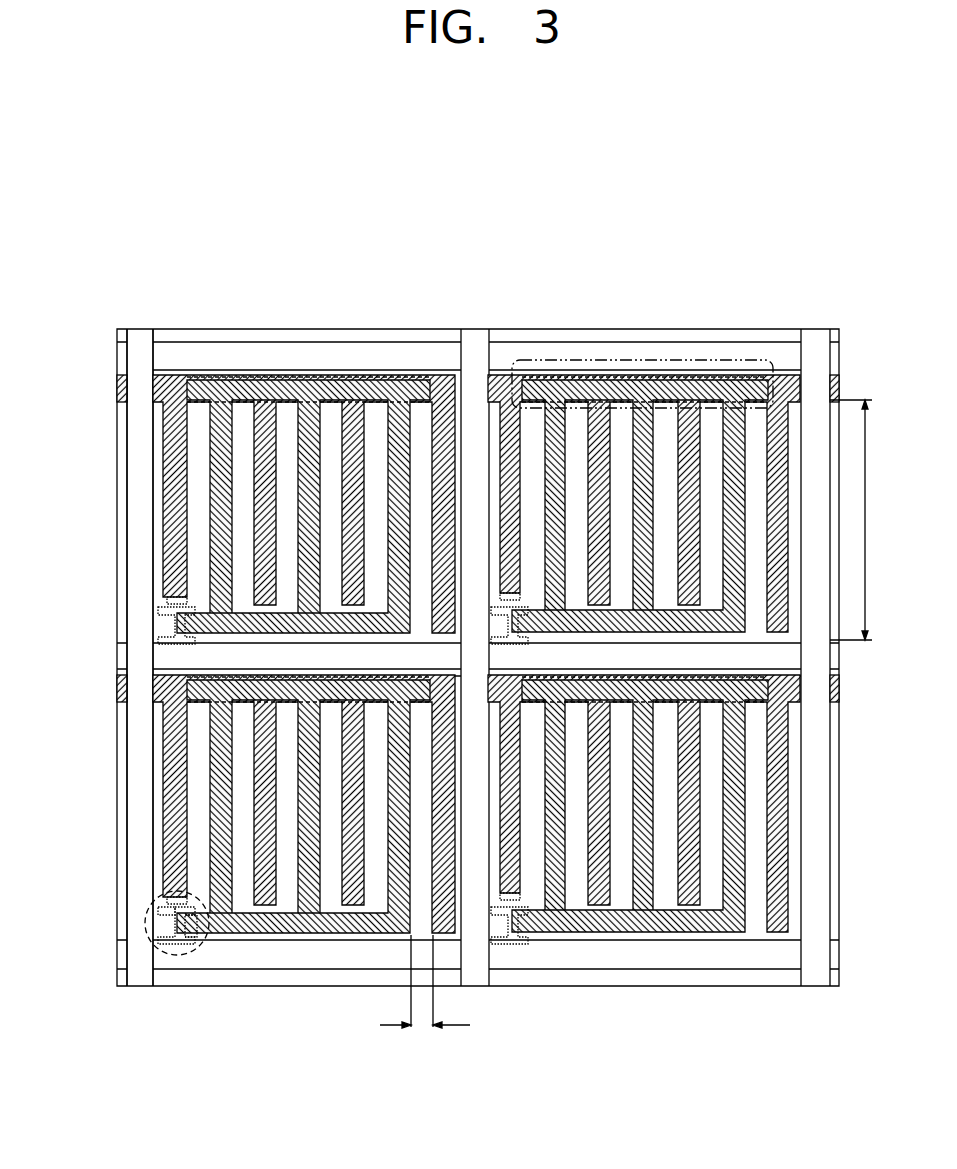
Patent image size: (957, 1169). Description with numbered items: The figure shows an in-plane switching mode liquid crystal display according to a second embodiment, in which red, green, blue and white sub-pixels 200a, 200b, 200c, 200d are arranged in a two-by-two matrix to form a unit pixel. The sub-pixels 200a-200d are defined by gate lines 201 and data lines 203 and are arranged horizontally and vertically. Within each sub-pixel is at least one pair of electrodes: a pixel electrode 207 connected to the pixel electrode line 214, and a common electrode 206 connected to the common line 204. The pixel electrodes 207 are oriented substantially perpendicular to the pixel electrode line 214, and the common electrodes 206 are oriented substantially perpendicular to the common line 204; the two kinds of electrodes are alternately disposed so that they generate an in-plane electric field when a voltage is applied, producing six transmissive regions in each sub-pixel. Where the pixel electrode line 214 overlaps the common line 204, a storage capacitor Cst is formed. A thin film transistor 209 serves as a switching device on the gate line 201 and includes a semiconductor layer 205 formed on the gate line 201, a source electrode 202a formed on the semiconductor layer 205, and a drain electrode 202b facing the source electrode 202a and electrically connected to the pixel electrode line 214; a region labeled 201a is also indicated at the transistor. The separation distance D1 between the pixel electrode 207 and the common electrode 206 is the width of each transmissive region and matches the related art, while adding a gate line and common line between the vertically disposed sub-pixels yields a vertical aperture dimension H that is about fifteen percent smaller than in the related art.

The R sub-pixel 200a is at (252, 906).
The G sub-pixel 200b is at (304, 412).
The B sub-pixel 200c is at (644, 412).
The W sub-pixel 200d is at (640, 1058).
The gate line 201 is at (180, 962).
The active layer 201a is at (168, 897).
The source electrode 202a is at (168, 923).
The drain electrode 202b is at (197, 932).
The data line 203 is at (133, 808).
The common line 204 is at (117, 388).
The semiconductor layer 205 is at (176, 945).
The common electrode 206 is at (262, 400).
The pixel electrode 207 is at (308, 400).
The thin film transistor 209 is at (138, 952).
The pixel electrode line 214 is at (387, 383).
The storage capacitor Cst is at (642, 341).
The aperture ratio in vertical direction H is at (857, 520).
The separation distance D1 is at (425, 996).